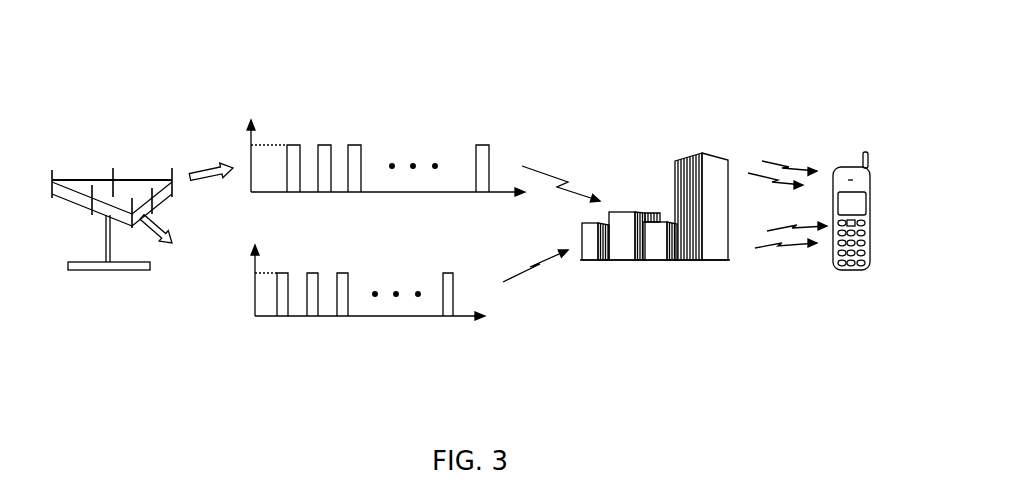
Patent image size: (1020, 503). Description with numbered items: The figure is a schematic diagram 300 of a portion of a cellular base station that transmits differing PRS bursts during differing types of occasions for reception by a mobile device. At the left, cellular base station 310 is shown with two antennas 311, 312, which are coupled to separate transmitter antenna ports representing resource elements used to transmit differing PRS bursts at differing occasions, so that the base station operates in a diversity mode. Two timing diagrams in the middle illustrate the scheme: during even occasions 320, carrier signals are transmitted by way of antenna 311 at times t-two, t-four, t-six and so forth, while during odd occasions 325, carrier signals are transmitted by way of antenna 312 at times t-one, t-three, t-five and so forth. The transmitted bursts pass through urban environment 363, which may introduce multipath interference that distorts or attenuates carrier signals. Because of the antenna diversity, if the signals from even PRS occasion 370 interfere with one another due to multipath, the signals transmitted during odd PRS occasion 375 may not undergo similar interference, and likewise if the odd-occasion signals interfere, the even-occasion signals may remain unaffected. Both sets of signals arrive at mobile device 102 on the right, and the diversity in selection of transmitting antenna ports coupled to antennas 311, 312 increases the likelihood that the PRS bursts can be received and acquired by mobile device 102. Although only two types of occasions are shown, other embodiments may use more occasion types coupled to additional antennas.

The schematic diagram 300 is at (177, 125).
The cellular base station 310 is at (112, 269).
The antenna 311 is at (170, 172).
The antenna 312 is at (132, 210).
The even occasions 320 is at (335, 128).
The odd occasions 325 is at (327, 255).
The urban environment 363 is at (583, 265).
The signals from even PRS occasion 370 is at (742, 163).
The signals from odd PRS occasion 375 is at (750, 242).
The mobile device 102 is at (863, 272).